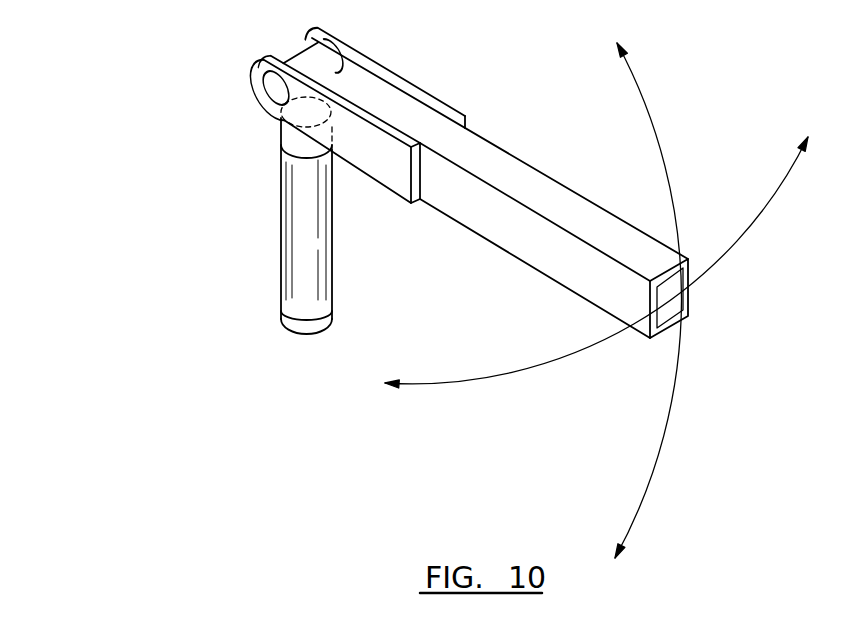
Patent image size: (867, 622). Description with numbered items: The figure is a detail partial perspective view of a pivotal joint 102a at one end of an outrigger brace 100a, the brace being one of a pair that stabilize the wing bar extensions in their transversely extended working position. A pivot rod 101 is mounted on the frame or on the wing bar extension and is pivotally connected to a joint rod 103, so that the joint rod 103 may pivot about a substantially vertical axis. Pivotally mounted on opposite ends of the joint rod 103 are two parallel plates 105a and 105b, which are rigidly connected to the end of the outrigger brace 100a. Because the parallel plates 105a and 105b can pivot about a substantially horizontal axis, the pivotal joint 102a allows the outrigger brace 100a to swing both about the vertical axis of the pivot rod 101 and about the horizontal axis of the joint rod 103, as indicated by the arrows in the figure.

The outrigger brace 100a is at (607, 220).
The pivot rod 101 is at (297, 265).
The pivotal joint 102a is at (240, 78).
The joint rod 103 is at (268, 98).
The parallel plate 105a is at (357, 158).
The parallel plate 105b is at (407, 80).